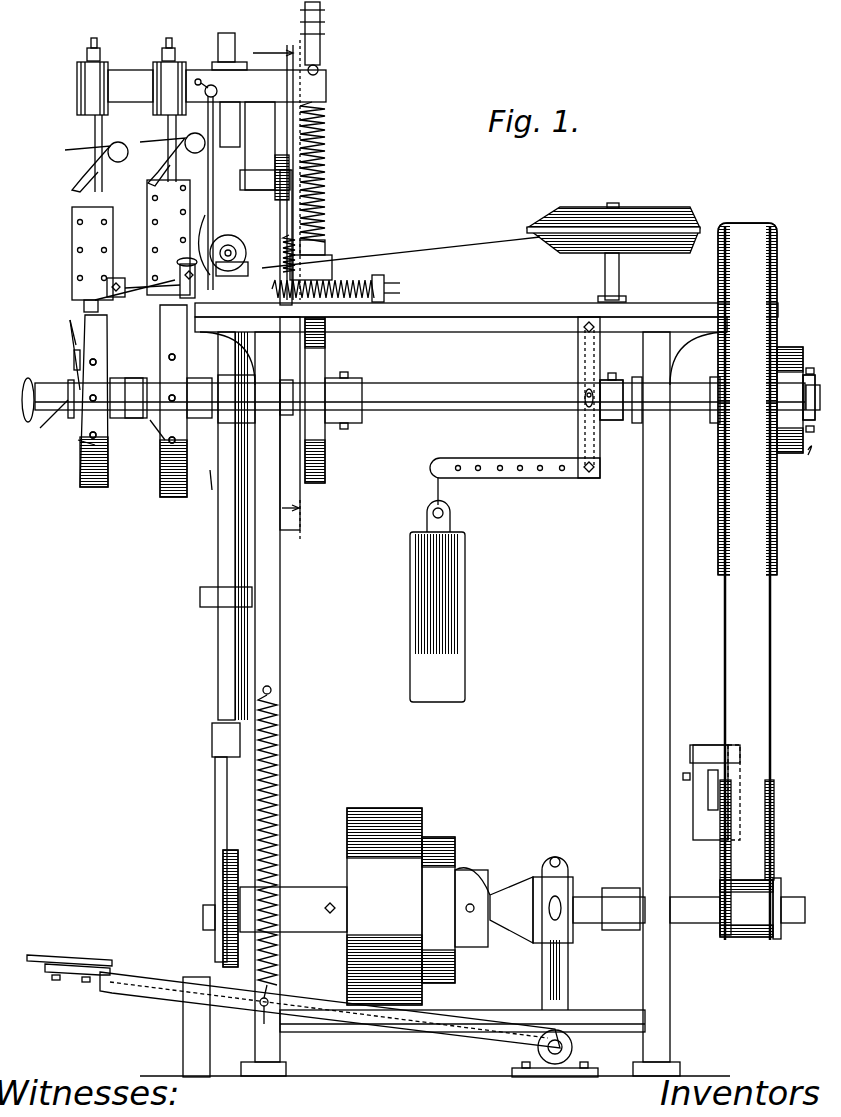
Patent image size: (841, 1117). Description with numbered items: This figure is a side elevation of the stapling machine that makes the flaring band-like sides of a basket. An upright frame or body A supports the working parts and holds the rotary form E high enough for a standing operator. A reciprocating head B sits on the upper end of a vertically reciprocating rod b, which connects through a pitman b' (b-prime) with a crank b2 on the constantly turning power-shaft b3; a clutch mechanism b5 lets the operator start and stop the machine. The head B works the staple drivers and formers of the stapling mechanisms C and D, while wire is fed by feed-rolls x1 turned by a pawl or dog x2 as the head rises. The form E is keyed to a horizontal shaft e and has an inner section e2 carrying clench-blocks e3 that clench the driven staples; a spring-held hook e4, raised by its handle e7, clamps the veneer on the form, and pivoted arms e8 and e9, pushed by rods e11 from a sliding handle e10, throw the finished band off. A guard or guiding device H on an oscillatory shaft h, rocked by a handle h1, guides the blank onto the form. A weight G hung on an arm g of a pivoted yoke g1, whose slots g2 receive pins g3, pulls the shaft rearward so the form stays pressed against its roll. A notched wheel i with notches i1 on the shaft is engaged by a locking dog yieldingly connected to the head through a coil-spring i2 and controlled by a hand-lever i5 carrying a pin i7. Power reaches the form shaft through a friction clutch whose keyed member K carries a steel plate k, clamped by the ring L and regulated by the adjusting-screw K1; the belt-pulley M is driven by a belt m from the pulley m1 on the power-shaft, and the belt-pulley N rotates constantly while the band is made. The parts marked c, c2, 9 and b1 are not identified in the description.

The upright frame or body A is at (280, 610).
The reciprocating head B is at (128, 72).
The stapling mechanism C is at (85, 205).
The stapling mechanism D is at (165, 220).
The vertically-reciprocating rod b is at (228, 40).
The pawl or dog x2 is at (212, 190).
The feed-rolls x1 is at (240, 245).
The pin i7 is at (293, 68).
The hand-lever i5 is at (320, 70).
The coil-spring i2 is at (290, 125).
The oscillatory shaft h is at (392, 288).
The handle h1 is at (185, 258).
The guard or guiding device H is at (150, 312).
The steel plate k is at (458, 246).
The keyed member K is at (613, 252).
The shaft c is at (440, 392).
The notched wheel or disk i is at (330, 428).
The notches i1 is at (340, 395).
The rotary form E is at (160, 470).
The shaft e is at (80, 398).
The inner section e2 is at (49, 424).
The clench-blocks e3 is at (97, 360).
The hook e4 is at (82, 448).
The handle e7 is at (70, 338).
The pivoted arm e8 is at (160, 365).
The pivoted arm e9 is at (160, 450).
The sliding handle portion e10 is at (40, 380).
The rods or projections e11 is at (148, 385).
The collar c2 is at (208, 481).
The dimension 9 is at (278, 291).
The arm g is at (540, 470).
The circular yoke g1 is at (590, 437).
The slots g2 is at (585, 392).
The pins g3 is at (600, 412).
The weight G is at (455, 605).
The belt-pulley M is at (722, 278).
The belt m is at (735, 645).
The pulley m1 is at (775, 938).
The clamping plate or ring L is at (790, 350).
The adjusting-screw K1 is at (806, 372).
The belt-pulley N is at (331, 906).
The clutch mechanism b5 is at (437, 845).
The rotary power-shaft b3 is at (585, 897).
The crank b2 is at (200, 922).
The treadle b1 is at (380, 1030).
The pitman b-prime is at (215, 808).